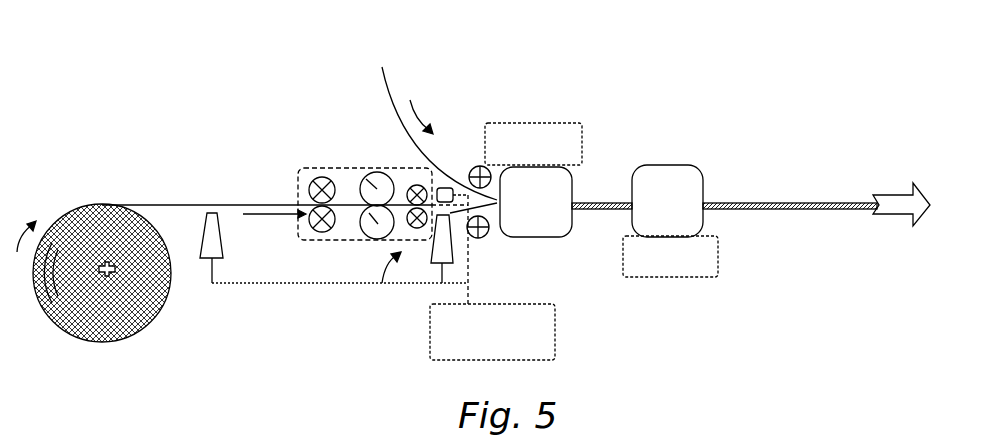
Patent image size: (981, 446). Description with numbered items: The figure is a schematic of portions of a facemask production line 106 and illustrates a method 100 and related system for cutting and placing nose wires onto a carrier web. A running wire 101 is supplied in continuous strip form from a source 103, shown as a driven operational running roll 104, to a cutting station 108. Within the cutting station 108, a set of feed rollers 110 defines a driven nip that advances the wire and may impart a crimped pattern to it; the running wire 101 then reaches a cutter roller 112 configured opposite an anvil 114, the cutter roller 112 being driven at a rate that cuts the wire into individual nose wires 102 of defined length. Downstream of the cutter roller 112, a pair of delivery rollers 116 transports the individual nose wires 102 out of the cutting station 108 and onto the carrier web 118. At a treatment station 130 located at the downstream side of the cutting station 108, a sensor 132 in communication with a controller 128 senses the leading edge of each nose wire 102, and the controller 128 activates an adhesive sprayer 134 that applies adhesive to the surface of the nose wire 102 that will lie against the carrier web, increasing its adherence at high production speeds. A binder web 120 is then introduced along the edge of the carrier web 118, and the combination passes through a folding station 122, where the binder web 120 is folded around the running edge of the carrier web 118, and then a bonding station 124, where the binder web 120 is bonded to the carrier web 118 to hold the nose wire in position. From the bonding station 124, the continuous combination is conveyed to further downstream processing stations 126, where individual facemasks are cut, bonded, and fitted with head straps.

The method 100 is at (323, 81).
The running wire 101 is at (270, 204).
The individual nose wires 102 is at (598, 211).
The source 103 is at (92, 205).
The driven operational running roll 104 is at (128, 318).
The production line 106 is at (736, 105).
The cutting station 108 is at (316, 167).
The feed rollers 110 is at (312, 233).
The cutter roller 112 is at (372, 240).
The anvil 114 is at (378, 181).
The delivery rollers 116 is at (412, 186).
The carrier web 118 is at (432, 218).
The binder web 120 is at (390, 100).
The folding station 122 is at (555, 122).
The bonding station 124 is at (676, 278).
The downstream processing stations 126 is at (897, 217).
The controller 128 is at (555, 326).
The treatment station 130 is at (475, 275).
The sensor 132 is at (445, 187).
The adhesive sprayer 134 is at (478, 238).